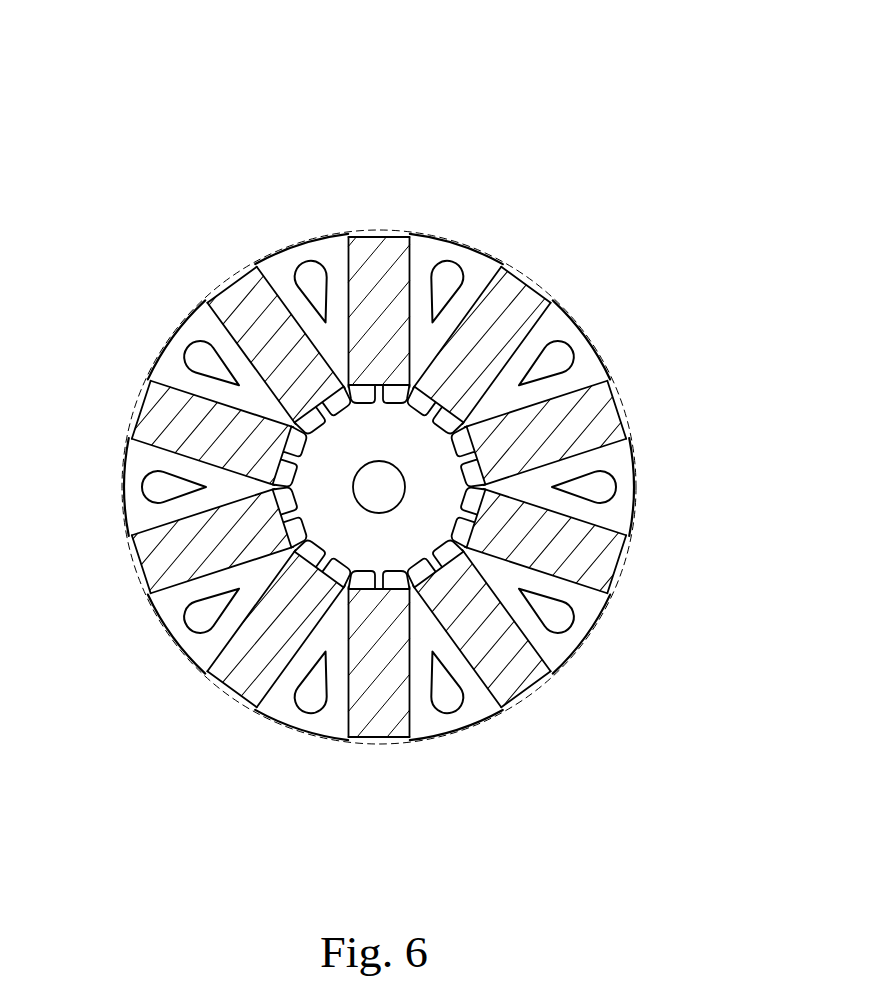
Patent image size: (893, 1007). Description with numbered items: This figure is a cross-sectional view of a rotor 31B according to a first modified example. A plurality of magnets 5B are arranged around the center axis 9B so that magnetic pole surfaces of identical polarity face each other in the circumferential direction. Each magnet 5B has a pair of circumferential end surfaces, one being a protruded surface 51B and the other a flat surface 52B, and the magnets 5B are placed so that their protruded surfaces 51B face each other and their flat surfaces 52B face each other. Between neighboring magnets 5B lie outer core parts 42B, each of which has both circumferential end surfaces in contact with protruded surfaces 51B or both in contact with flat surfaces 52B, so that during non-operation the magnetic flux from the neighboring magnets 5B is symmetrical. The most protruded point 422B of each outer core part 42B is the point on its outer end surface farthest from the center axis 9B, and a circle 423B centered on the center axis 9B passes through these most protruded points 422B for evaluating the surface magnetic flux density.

The rotor 31B is at (583, 152).
The magnet 5B is at (231, 672).
The center axis 9B is at (380, 488).
The outer core part 42B is at (587, 602).
The most protruded point 422B is at (587, 336).
The circle 423B is at (623, 401).
The protruded surface 51B is at (603, 512).
The flat surface 52B is at (347, 303).